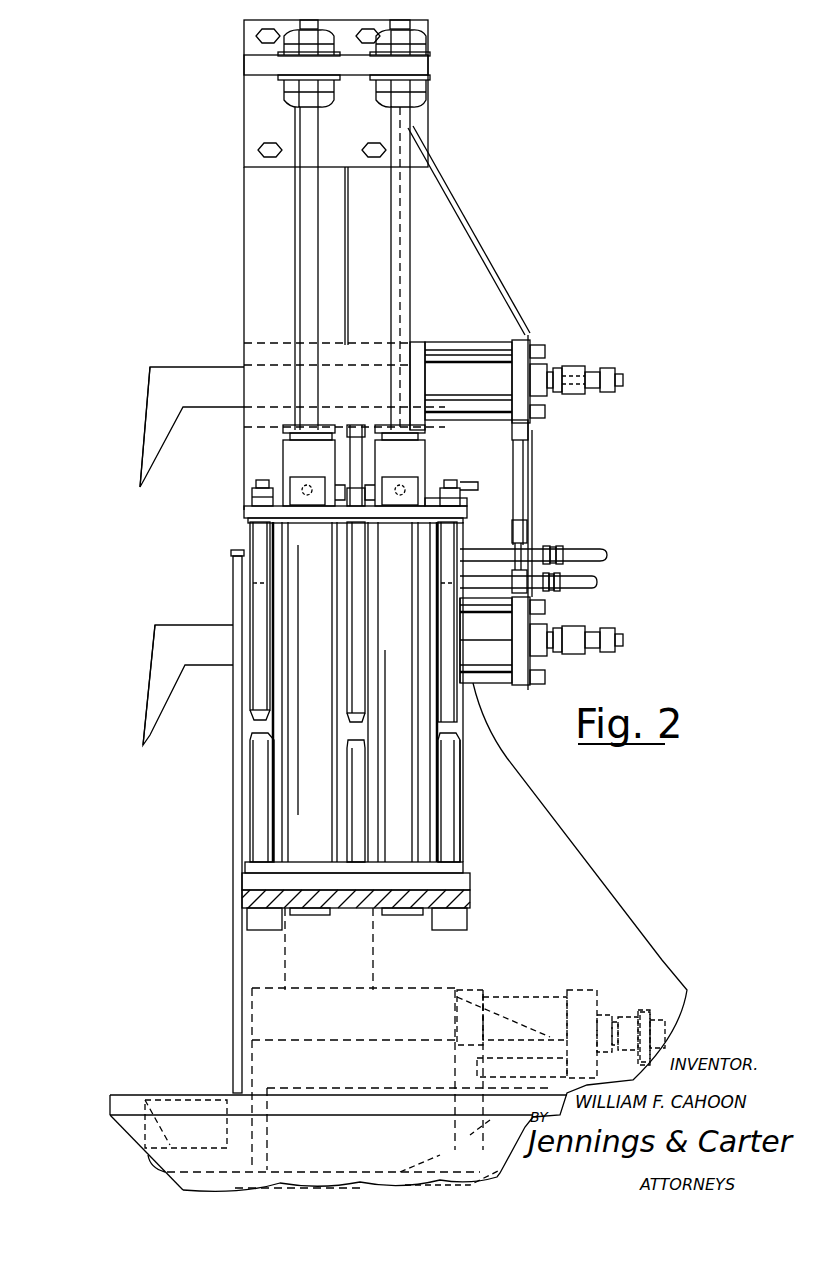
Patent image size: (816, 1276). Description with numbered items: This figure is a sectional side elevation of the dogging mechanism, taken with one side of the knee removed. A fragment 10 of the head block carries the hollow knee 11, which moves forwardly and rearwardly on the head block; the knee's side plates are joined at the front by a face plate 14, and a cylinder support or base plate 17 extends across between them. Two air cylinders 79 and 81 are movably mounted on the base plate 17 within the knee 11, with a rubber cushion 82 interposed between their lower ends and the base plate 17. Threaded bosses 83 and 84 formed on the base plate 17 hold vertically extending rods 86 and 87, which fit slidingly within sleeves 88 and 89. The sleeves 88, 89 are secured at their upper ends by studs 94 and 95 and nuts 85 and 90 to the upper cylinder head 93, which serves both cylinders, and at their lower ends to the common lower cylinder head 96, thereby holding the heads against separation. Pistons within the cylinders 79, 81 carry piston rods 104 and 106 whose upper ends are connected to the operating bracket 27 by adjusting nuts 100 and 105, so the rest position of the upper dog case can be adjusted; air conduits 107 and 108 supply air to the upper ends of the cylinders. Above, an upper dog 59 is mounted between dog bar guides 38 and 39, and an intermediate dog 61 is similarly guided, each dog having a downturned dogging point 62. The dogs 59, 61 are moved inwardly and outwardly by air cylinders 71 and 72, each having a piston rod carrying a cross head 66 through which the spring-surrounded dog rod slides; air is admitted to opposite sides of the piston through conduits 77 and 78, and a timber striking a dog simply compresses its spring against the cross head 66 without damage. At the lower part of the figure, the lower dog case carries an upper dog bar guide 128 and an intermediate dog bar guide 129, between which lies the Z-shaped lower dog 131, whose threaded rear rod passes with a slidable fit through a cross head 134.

The fragment of head block 10 is at (212, 1095).
The hollow knee 11 is at (636, 911).
The face plate 14 is at (235, 1008).
The cylinder support or base plate 17 is at (470, 900).
The operating bracket 27 is at (426, 64).
The dog bar guide 38 is at (244, 345).
The dog bar guide 39 is at (258, 430).
The upper dog 59 is at (158, 372).
The intermediate dog 61 is at (168, 628).
The downturned dogging point 62 is at (150, 478).
The cross head 66 is at (585, 366).
The air cylinder 71 is at (478, 378).
The air cylinder 72 is at (478, 632).
The conduit 77 is at (520, 477).
The conduit 78 is at (478, 553).
The air cylinder 79 is at (302, 716).
The air cylinder 81 is at (443, 690).
The rubber cushion 82 is at (471, 880).
The threaded boss 83 is at (272, 932).
The threaded boss 84 is at (450, 932).
The nut 85 is at (258, 505).
The vertically extending rod 86 is at (262, 737).
The vertically extending rod 87 is at (468, 742).
The sleeve 88 is at (270, 845).
The sleeve 89 is at (462, 840).
The nut 90 is at (462, 500).
The upper cylinder head 93 is at (262, 520).
The stud 94 is at (262, 481).
The stud 95 is at (450, 481).
The lower cylinder head 96 is at (466, 866).
The adjusting nut 100 is at (290, 43).
The piston rod 104 is at (304, 220).
The adjusting nut 105 is at (290, 90).
The piston rod 106 is at (405, 245).
The air conduit 107 is at (320, 466).
The air conduit 108 is at (410, 478).
The upper dog bar guide 128 is at (515, 1003).
The intermediate dog bar guide 129 is at (492, 1125).
The lower dog 131 is at (172, 1145).
The cross head 134 is at (648, 1010).